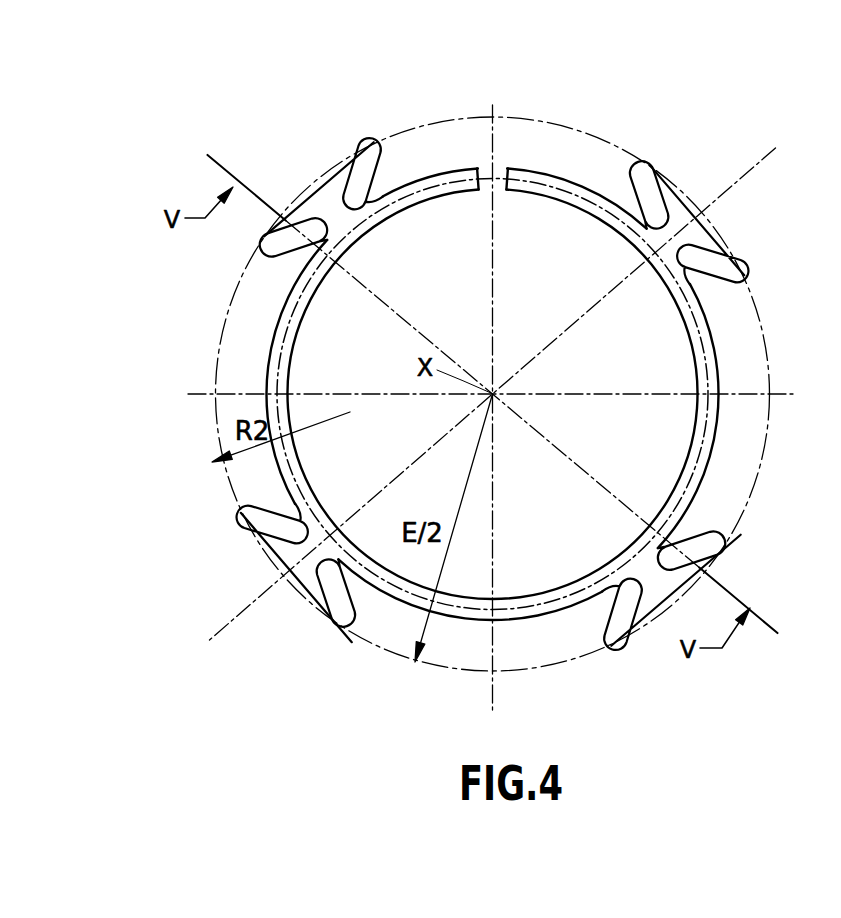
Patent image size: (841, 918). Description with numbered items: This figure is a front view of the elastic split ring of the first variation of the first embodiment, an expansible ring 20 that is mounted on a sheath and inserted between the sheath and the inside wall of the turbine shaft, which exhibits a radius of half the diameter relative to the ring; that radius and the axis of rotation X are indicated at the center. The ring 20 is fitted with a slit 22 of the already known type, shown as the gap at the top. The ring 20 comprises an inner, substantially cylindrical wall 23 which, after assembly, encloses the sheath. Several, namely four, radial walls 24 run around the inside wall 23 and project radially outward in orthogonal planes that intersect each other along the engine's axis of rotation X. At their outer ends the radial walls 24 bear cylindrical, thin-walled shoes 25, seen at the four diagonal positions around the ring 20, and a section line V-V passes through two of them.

The expansible ring 20 is at (535, 135).
The slit 22 is at (481, 146).
The inner cylindrical wall 23 is at (703, 424).
The radial wall 24 is at (337, 207).
The shoe 25 is at (340, 185).